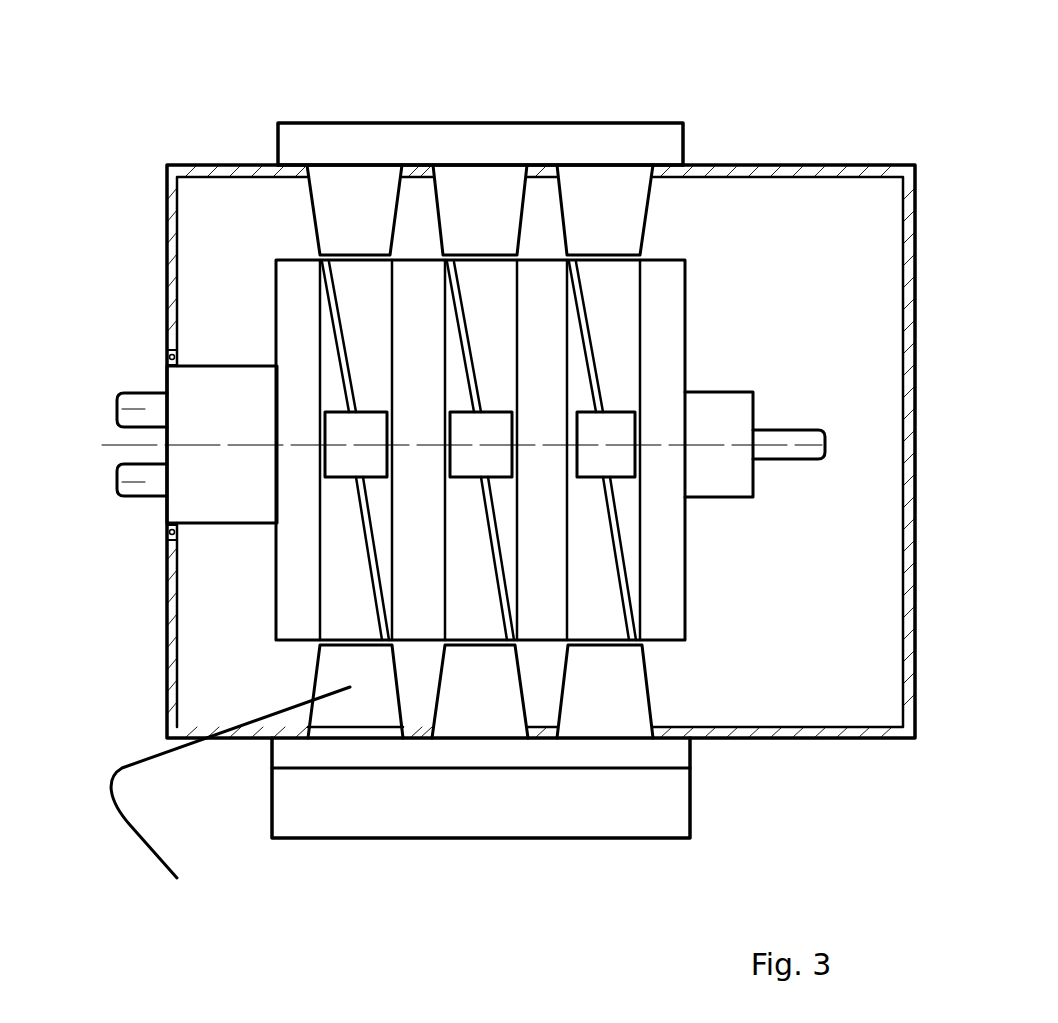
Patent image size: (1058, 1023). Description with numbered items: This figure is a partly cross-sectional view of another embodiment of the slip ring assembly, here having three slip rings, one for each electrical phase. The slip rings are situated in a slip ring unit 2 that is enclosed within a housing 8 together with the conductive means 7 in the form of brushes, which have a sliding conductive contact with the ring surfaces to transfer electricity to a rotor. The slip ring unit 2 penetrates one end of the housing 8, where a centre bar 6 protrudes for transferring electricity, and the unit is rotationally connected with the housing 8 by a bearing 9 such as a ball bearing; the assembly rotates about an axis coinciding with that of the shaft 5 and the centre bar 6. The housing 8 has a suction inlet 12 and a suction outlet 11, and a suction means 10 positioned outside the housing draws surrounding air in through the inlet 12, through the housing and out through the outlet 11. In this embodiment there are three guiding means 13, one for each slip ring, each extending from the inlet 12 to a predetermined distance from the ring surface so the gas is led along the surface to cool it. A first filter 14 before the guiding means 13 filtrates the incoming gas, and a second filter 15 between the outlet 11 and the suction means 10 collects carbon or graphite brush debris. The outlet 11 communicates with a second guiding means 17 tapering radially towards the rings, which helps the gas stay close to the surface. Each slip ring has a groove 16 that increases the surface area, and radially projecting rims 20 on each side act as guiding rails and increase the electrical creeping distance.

The slip ring unit 2 is at (662, 617).
The shaft 5 is at (780, 452).
The centre bar 6 is at (145, 480).
The conductive means 7 is at (605, 447).
The housing 8 is at (203, 173).
The bearing 9 is at (167, 355).
The suction means 10 is at (360, 792).
The suction outlet 11 is at (363, 715).
The suction inlet 12 is at (472, 160).
The guiding means 13 is at (603, 207).
The first filter 14 is at (630, 137).
The second filter 15 is at (303, 753).
The groove 16 is at (627, 562).
The second guiding means 17 is at (230, 801).
The radially projecting rims 20 is at (640, 296).